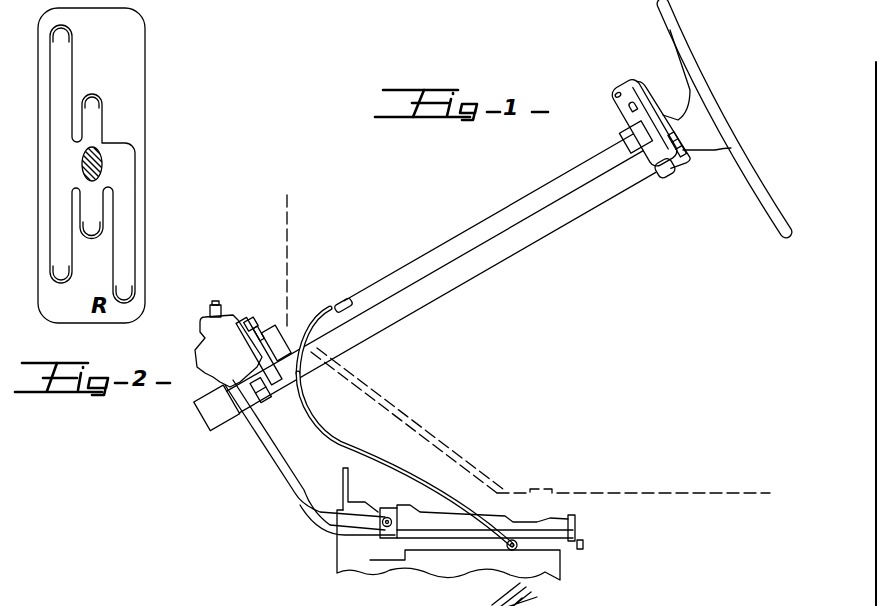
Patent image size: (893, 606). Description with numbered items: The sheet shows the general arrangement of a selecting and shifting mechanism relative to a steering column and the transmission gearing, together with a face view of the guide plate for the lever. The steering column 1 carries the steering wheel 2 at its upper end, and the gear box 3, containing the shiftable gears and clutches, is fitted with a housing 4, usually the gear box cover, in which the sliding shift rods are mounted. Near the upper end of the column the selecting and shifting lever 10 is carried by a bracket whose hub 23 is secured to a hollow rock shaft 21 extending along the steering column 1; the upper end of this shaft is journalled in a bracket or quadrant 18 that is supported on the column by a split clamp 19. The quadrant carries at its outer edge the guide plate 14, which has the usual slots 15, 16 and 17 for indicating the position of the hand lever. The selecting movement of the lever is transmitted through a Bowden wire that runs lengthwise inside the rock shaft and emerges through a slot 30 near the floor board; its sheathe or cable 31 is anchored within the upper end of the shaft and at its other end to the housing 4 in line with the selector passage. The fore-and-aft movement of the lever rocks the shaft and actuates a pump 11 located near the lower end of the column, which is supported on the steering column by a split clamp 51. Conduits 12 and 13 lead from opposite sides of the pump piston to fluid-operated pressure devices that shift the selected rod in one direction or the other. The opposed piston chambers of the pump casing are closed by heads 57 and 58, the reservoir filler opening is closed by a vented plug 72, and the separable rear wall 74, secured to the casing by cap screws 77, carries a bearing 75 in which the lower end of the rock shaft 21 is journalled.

In FIG. 1, the steering column 1 is at (535, 225).
In FIG. 2, the steering column 1 is at (83, 22).
In FIG. 1, the steering wheel 2 is at (775, 210).
In FIG. 2, the steering wheel 2 is at (70, 298).
In FIG. 1, the gear box 3 is at (431, 562).
In FIG. 2, the gear box 3 is at (92, 82).
In FIG. 1, the housing 4 is at (553, 543).
In FIG. 2, the housing 4 is at (90, 250).
In FIG. 2, the selecting and shifting lever 10 is at (101, 167).
In FIG. 1, the pump 11 is at (213, 333).
In FIG. 1, the conduit 12 is at (268, 444).
In FIG. 1, the conduit 13 is at (322, 518).
In FIG. 1, the guide plate 14 is at (668, 175).
In FIG. 2, the guide plate 14 is at (133, 113).
In FIG. 2, the slot 15 is at (100, 107).
In FIG. 2, the slot 16 is at (63, 45).
In FIG. 2, the slot 17 is at (118, 230).
In FIG. 1, the bracket or quadrant 18 is at (644, 90).
In FIG. 1, the split clamp 19 is at (683, 153).
In FIG. 1, the hollow rock shaft 21 is at (490, 220).
In FIG. 1, the hub 23 is at (630, 135).
In FIG. 1, the slot 30 is at (331, 305).
In FIG. 1, the sheathe or cable 31 is at (333, 441).
In FIG. 1, the split clamp 51 is at (262, 395).
In FIG. 1, the head 57 is at (388, 515).
In FIG. 1, the head 58 is at (575, 523).
In FIG. 1, the plug 72 is at (212, 305).
In FIG. 1, the rear wall 74 is at (248, 318).
In FIG. 1, the bearing 75 is at (276, 330).
In FIG. 1, the cap screws 77 is at (262, 338).